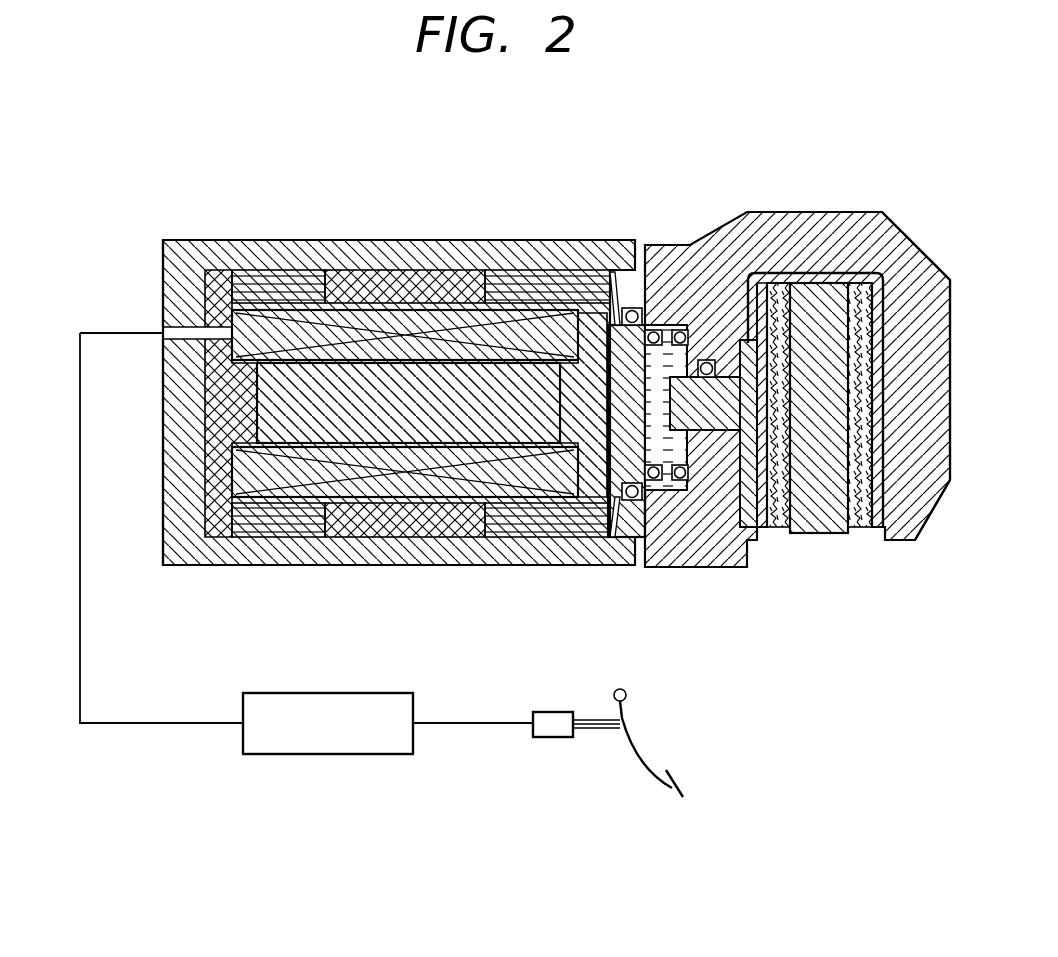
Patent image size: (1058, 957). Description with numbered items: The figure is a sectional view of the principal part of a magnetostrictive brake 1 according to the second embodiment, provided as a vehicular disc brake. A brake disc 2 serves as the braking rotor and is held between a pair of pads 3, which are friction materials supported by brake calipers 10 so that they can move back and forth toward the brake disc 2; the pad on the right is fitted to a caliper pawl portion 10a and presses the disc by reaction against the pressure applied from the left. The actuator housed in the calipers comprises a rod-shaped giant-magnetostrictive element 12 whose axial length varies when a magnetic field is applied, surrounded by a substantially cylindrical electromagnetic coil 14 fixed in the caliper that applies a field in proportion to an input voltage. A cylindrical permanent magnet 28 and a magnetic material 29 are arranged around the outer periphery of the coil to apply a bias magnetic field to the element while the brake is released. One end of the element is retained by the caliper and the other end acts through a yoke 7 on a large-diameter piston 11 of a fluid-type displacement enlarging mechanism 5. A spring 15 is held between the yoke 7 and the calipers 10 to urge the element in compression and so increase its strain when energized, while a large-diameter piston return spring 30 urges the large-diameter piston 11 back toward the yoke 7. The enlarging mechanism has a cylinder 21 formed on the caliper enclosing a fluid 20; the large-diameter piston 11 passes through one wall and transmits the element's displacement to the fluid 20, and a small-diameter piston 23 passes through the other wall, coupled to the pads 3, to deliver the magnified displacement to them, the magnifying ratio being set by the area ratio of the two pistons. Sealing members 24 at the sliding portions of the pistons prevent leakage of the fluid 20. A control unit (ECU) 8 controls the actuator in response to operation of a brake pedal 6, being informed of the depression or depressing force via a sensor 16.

The magnetostrictive brake 1 is at (168, 236).
The brake disc 2 is at (820, 300).
The pads 3 is at (852, 536).
The fluid-type displacement enlarging mechanism 5 is at (697, 322).
The brake pedal 6 is at (646, 775).
The yoke 7 is at (190, 318).
The control unit (ECU) 8 is at (333, 755).
The brake calipers 10 is at (588, 242).
The caliper pawl portion 10a is at (915, 546).
The large-diameter piston 11 is at (614, 420).
The giant-magnetostrictive element 12 is at (300, 372).
The electromagnetic coil 14 is at (382, 318).
The spring 15 is at (602, 470).
The sensor 16 is at (548, 738).
The fluid 20 is at (660, 350).
The cylinder 21 is at (660, 442).
The small-diameter piston 23 is at (749, 534).
The sealing members 24 is at (632, 502).
The cylindrical permanent magnet 28 is at (352, 526).
The magnetic material 29 is at (270, 520).
The large-diameter piston return spring 30 is at (694, 470).